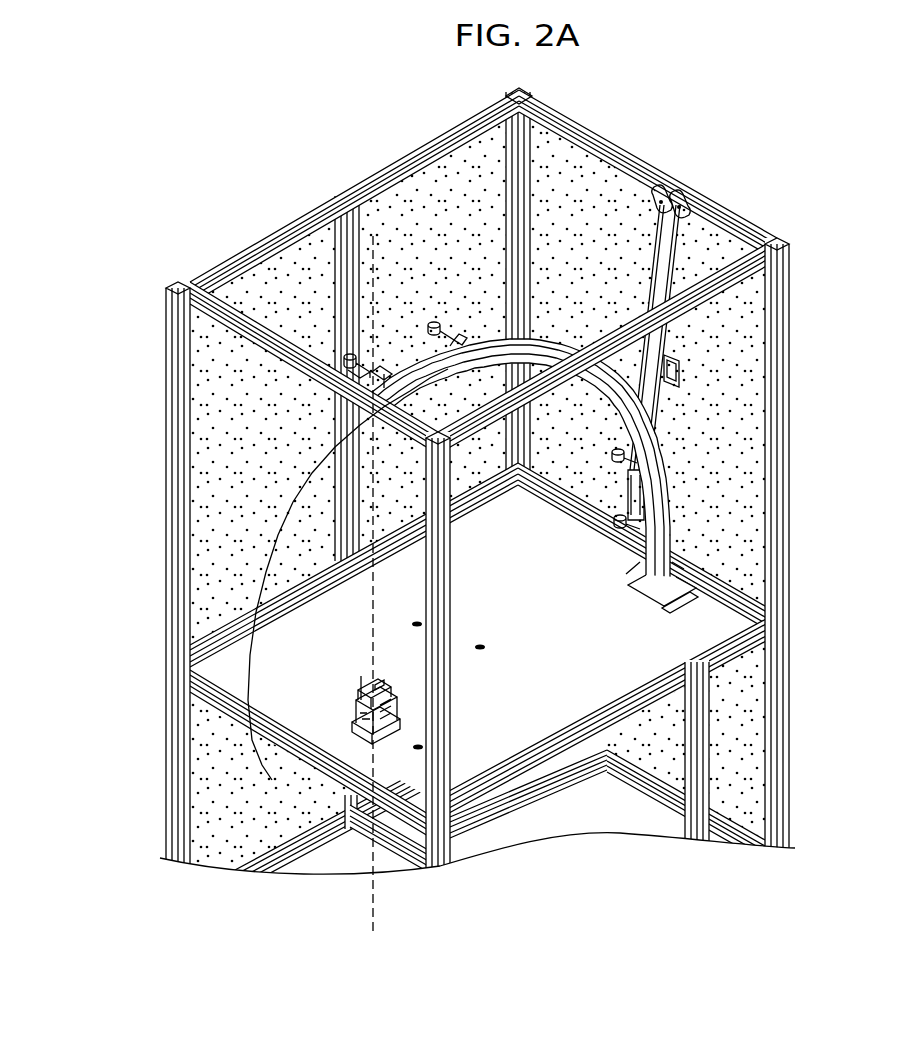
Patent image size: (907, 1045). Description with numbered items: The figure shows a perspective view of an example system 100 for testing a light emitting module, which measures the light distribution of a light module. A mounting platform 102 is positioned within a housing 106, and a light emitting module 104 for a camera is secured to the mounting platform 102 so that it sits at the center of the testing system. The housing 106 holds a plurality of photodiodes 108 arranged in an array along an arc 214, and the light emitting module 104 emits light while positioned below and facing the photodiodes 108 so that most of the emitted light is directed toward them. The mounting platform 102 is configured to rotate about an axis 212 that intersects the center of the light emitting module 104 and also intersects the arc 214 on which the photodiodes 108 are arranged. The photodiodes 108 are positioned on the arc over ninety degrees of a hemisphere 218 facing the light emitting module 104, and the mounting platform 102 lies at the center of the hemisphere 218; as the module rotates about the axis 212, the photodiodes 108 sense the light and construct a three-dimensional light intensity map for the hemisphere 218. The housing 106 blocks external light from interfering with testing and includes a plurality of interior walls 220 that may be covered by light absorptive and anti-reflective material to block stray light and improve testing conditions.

The system for testing a light emitting module 100 is at (483, 490).
The mounting platform 102 is at (637, 588).
The light-emitting module 104 is at (352, 706).
The housing 106 is at (790, 302).
The photodiodes 108 is at (347, 360).
The axis 212 is at (371, 612).
The arc 214 is at (542, 340).
The hemisphere 218 is at (625, 660).
The interior walls 220 is at (205, 508).